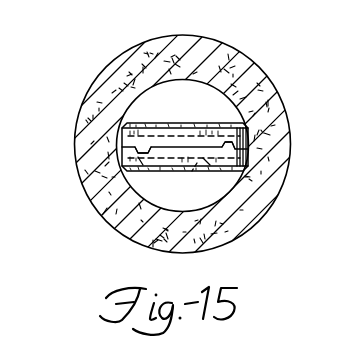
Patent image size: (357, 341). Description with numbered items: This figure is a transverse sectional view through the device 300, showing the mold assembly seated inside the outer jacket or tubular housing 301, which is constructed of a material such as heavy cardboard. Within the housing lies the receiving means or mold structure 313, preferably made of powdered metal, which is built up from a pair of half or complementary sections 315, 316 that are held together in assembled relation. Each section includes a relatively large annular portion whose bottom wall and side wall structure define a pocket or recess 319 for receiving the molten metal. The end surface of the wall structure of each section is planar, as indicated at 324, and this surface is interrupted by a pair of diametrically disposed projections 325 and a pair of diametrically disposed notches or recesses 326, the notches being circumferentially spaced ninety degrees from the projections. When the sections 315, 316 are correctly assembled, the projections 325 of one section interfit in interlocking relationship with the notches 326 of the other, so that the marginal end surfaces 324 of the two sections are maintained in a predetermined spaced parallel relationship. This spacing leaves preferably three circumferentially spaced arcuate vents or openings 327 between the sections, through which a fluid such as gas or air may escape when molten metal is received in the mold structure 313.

The device 300 is at (260, 61).
The outer jacket or tubular housing 301 is at (272, 97).
The receiving means or mold structure 313 is at (138, 117).
The half or complementary section 315 is at (244, 126).
The half or complementary section 316 is at (125, 175).
The pocket or recess 319 is at (192, 172).
The planar end surface 324 is at (167, 150).
The projection 325 is at (125, 138).
The notch or recess 326 is at (247, 153).
The arcuate vent or opening 327 is at (137, 151).